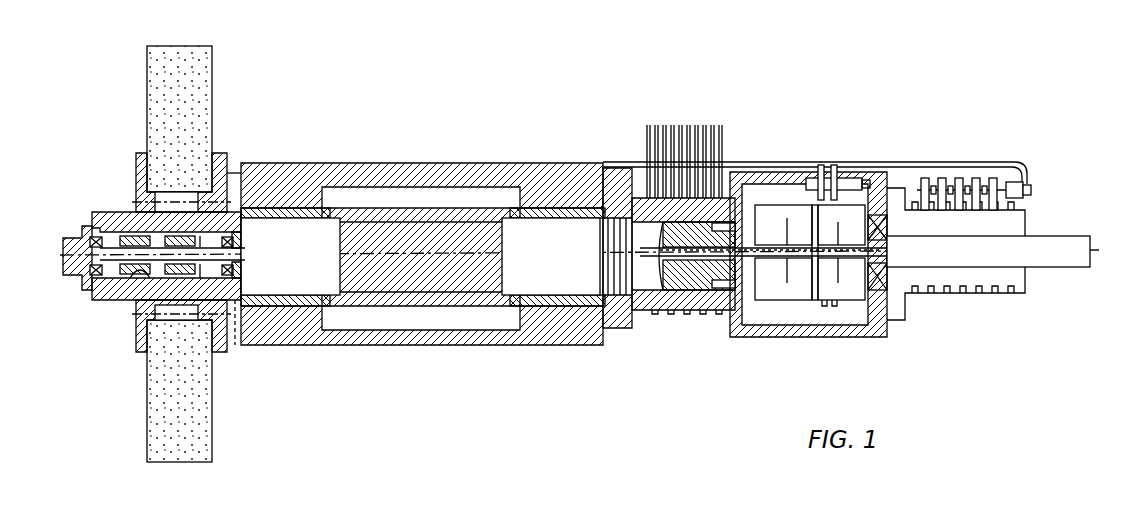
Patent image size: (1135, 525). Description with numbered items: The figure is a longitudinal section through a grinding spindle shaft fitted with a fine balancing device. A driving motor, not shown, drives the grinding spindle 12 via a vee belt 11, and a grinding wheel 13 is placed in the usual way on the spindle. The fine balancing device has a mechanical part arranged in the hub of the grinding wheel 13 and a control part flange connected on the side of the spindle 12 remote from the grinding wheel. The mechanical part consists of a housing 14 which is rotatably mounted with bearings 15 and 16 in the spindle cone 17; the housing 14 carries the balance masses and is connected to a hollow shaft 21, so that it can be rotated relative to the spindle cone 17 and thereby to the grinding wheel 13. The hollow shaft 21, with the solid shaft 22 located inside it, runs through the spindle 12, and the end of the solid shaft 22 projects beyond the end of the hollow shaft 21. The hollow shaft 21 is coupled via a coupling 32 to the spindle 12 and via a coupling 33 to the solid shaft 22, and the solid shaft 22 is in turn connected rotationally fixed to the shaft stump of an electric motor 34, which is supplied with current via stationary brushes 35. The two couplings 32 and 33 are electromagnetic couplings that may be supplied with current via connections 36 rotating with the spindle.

The vee belt 11 is at (701, 106).
The grinding spindle 12 is at (416, 247).
The grinding wheel 13 is at (205, 90).
The housing 14 is at (108, 292).
The bearing 15 is at (80, 232).
The bearing 16 is at (243, 246).
The spindle cone 17 is at (236, 300).
The hollow shaft 21 is at (243, 252).
The solid shaft 22 is at (243, 264).
The coupling 32 is at (773, 215).
The coupling 33 is at (850, 292).
The electric motor 34 is at (943, 282).
The stationary brushes 35 is at (993, 178).
The connections 36 is at (834, 165).